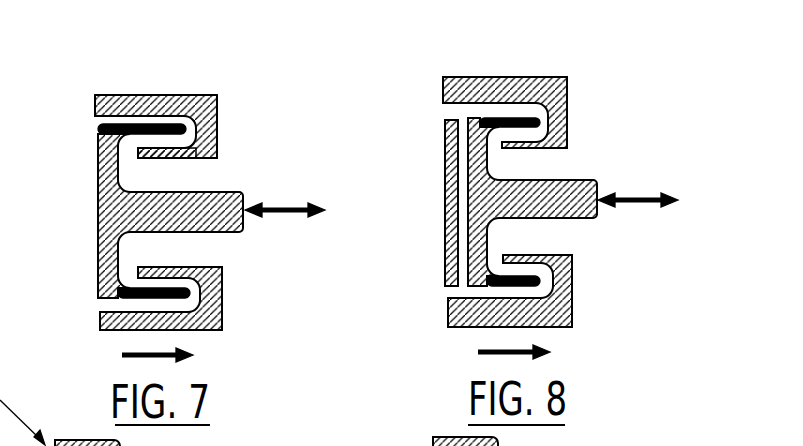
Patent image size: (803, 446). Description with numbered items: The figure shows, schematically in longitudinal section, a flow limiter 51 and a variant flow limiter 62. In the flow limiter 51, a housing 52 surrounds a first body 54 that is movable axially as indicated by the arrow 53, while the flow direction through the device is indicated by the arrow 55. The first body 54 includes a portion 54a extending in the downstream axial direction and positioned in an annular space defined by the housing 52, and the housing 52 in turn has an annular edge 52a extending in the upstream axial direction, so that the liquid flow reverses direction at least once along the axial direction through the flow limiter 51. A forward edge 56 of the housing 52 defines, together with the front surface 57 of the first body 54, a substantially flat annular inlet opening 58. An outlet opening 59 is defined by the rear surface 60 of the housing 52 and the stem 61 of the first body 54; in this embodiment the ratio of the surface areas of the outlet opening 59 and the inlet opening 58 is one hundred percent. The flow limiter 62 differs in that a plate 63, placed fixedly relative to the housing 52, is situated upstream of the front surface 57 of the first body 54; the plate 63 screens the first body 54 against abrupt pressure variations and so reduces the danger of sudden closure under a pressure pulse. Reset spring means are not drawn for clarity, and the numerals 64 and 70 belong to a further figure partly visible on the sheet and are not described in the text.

In FIG. 7, the flow limiter 51 is at (213, 76).
In FIG. 7, the housing 52 is at (148, 95).
In FIG. 8, the housing 52 is at (495, 77).
In FIG. 7, the annular edge 52a is at (173, 150).
In FIG. 7, the arrow 53 is at (293, 203).
In FIG. 8, the arrow 53 is at (647, 195).
In FIG. 7, the first body 54 is at (95, 210).
In FIG. 8, the first body 54 is at (495, 233).
In FIG. 7, the portion 54a is at (175, 95).
In FIG. 7, the arrow 55 is at (187, 347).
In FIG. 8, the arrow 55 is at (542, 343).
In FIG. 7, the forward edge 56 is at (95, 98).
In FIG. 8, the forward edge 56 is at (442, 88).
In FIG. 7, the front surface 57 is at (97, 177).
In FIG. 8, the front surface 57 is at (445, 160).
In FIG. 7, the inlet opening 58 is at (97, 120).
In FIG. 8, the inlet opening 58 is at (447, 112).
In FIG. 7, the outlet opening 59 is at (202, 178).
In FIG. 8, the outlet opening 59 is at (560, 167).
In FIG. 7, the rear surface 60 is at (218, 127).
In FIG. 8, the rear surface 60 is at (568, 107).
In FIG. 7, the stem 61 is at (228, 232).
In FIG. 8, the stem 61 is at (575, 213).
In FIG. 8, the flow limiter 62 is at (580, 62).
In FIG. 8, the plate 63 is at (447, 198).
In FIG. 8, the element of further figure 64 is at (620, 445).
In FIG. 8, the element of further figure 70 is at (500, 441).